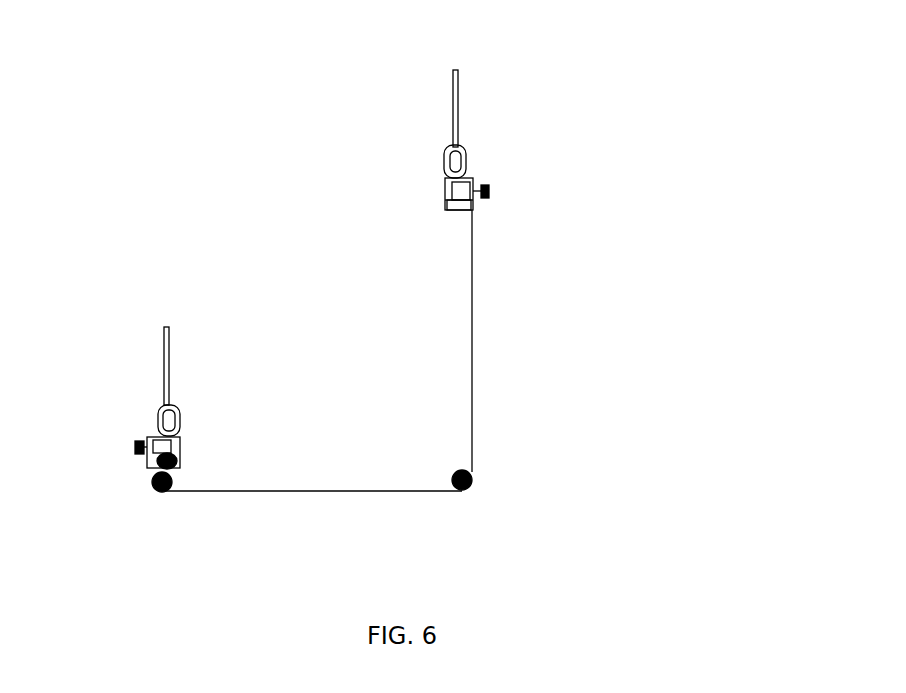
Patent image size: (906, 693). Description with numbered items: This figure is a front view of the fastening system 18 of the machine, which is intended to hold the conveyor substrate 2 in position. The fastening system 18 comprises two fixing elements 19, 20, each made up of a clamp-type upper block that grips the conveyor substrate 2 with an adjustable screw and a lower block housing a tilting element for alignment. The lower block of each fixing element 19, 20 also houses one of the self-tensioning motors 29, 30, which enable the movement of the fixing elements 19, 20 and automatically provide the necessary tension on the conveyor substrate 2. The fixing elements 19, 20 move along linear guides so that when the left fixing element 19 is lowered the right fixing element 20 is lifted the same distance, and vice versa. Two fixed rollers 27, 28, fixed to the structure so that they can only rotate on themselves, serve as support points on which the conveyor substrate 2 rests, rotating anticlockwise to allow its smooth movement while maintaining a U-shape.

The conveyor substrate 2 is at (474, 425).
The fastening system 18 is at (469, 376).
The fixing element 19 is at (158, 419).
The fixing element 20 is at (469, 156).
The fixed roller 27 is at (155, 493).
The fixed roller 28 is at (468, 490).
The self-tensioning motor 29 is at (174, 472).
The self-tensioning motor 30 is at (448, 213).